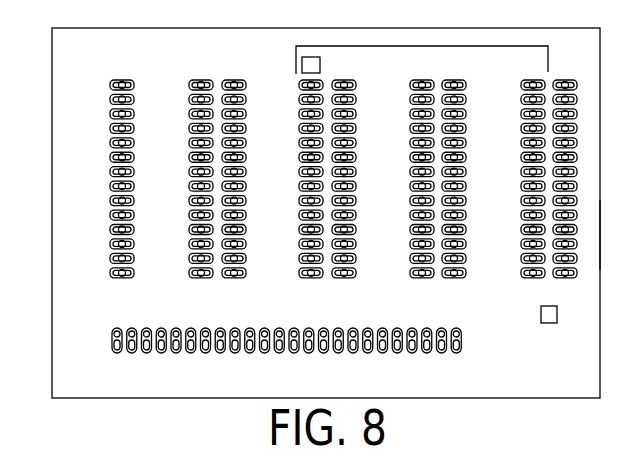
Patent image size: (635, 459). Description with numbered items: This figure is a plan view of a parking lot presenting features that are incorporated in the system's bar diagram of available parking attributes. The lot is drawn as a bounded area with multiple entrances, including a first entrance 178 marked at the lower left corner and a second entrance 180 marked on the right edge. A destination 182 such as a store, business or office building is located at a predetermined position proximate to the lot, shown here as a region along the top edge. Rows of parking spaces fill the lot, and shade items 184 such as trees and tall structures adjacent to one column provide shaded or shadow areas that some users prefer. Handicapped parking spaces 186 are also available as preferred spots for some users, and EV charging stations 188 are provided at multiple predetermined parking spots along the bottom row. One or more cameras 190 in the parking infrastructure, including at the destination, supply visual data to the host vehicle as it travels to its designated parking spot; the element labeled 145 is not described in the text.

The mounting hole 145 is at (303, 72).
The first entrance 178 is at (98, 385).
The second entrance 180 is at (618, 248).
The destination 182 is at (534, 67).
The shade items 184 is at (104, 79).
The handicapped parking spaces 186 is at (422, 79).
The EV charging stations 188 is at (459, 355).
The cameras 190 is at (541, 313).